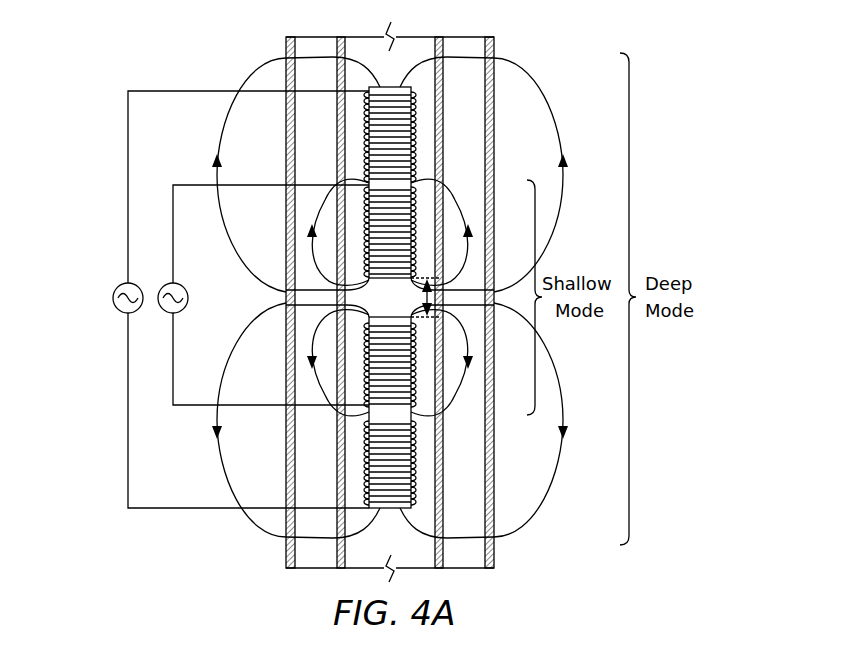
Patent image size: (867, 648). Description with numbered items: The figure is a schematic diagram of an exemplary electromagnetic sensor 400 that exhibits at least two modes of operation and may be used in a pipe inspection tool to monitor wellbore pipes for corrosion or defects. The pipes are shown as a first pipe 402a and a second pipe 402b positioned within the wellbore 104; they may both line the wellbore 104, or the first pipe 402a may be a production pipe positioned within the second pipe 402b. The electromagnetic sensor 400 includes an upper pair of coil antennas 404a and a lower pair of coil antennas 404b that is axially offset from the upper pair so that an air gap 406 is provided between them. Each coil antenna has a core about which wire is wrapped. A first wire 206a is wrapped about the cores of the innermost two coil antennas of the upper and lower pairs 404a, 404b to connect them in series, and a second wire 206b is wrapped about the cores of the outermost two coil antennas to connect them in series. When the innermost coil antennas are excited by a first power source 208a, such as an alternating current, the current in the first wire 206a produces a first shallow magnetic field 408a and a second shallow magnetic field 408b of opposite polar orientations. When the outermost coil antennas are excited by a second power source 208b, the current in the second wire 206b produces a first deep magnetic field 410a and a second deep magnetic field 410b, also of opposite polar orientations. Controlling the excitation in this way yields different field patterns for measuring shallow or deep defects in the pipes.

The wellbore 104 is at (398, 50).
The electromagnetic sensor 400 is at (163, 72).
The first pipe 402a is at (337, 121).
The second pipe 402b is at (286, 180).
The first wire 206a is at (366, 278).
The second wire 206b is at (366, 498).
The first power source 208a is at (188, 299).
The second power source 208b is at (113, 299).
The upper pair of coil antennas 404a is at (429, 137).
The lower pair of coil antennas 404b is at (429, 456).
The air gap 406 is at (442, 292).
The first shallow magnetic field 408a is at (471, 196).
The second shallow magnetic field 408b is at (457, 413).
The first deep magnetic field 410a is at (530, 72).
The second deep magnetic field 410b is at (543, 505).